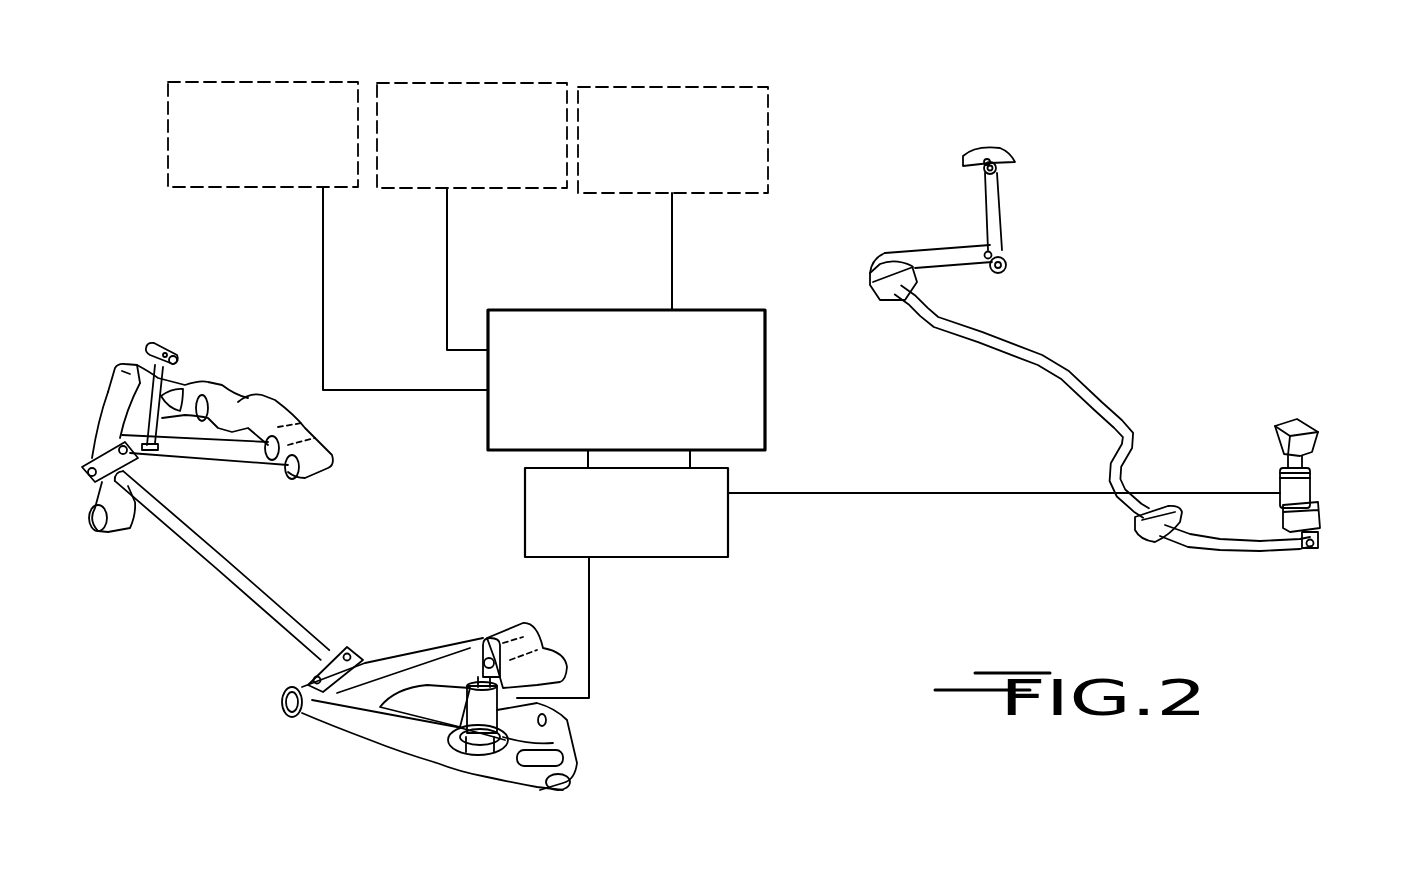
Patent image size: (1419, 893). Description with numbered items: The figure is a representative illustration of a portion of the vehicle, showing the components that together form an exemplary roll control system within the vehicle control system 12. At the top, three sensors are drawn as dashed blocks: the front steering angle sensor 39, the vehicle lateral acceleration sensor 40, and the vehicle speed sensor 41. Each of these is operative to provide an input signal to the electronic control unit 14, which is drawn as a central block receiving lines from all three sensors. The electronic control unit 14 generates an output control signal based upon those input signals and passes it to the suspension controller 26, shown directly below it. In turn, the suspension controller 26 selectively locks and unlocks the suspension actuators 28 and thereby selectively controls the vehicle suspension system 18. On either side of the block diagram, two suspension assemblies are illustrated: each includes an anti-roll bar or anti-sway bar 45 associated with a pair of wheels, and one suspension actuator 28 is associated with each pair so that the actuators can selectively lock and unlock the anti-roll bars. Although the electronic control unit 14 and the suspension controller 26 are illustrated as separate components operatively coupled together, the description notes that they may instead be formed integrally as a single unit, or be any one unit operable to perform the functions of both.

The vehicle control system 12 is at (897, 112).
The electronic control unit 14 is at (765, 382).
The vehicle suspension system 18 is at (768, 600).
The suspension controller 26 is at (525, 513).
The suspension actuator 28 is at (470, 682).
The front steering angle sensor 39 is at (280, 82).
The vehicle lateral acceleration sensor 40 is at (460, 83).
The vehicle speed sensor 41 is at (630, 87).
The anti-roll bar 45 is at (237, 570).